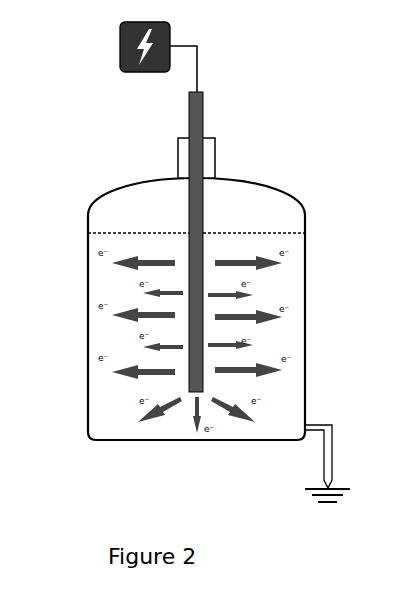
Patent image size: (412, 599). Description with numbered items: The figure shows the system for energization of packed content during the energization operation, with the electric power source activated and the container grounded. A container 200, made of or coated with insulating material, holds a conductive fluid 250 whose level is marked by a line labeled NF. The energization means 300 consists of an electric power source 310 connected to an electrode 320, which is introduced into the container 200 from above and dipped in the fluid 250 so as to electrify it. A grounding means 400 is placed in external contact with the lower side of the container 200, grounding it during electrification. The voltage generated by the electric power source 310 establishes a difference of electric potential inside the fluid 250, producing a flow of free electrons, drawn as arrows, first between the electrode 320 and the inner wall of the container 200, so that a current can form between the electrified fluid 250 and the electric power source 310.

The container 200 is at (88, 282).
The fluid 250 is at (262, 235).
The nanofluid NF is at (124, 228).
The energization means 300 is at (199, 68).
The electric power source 310 is at (120, 48).
The electrode 320 is at (204, 212).
The grounding means 400 is at (332, 455).